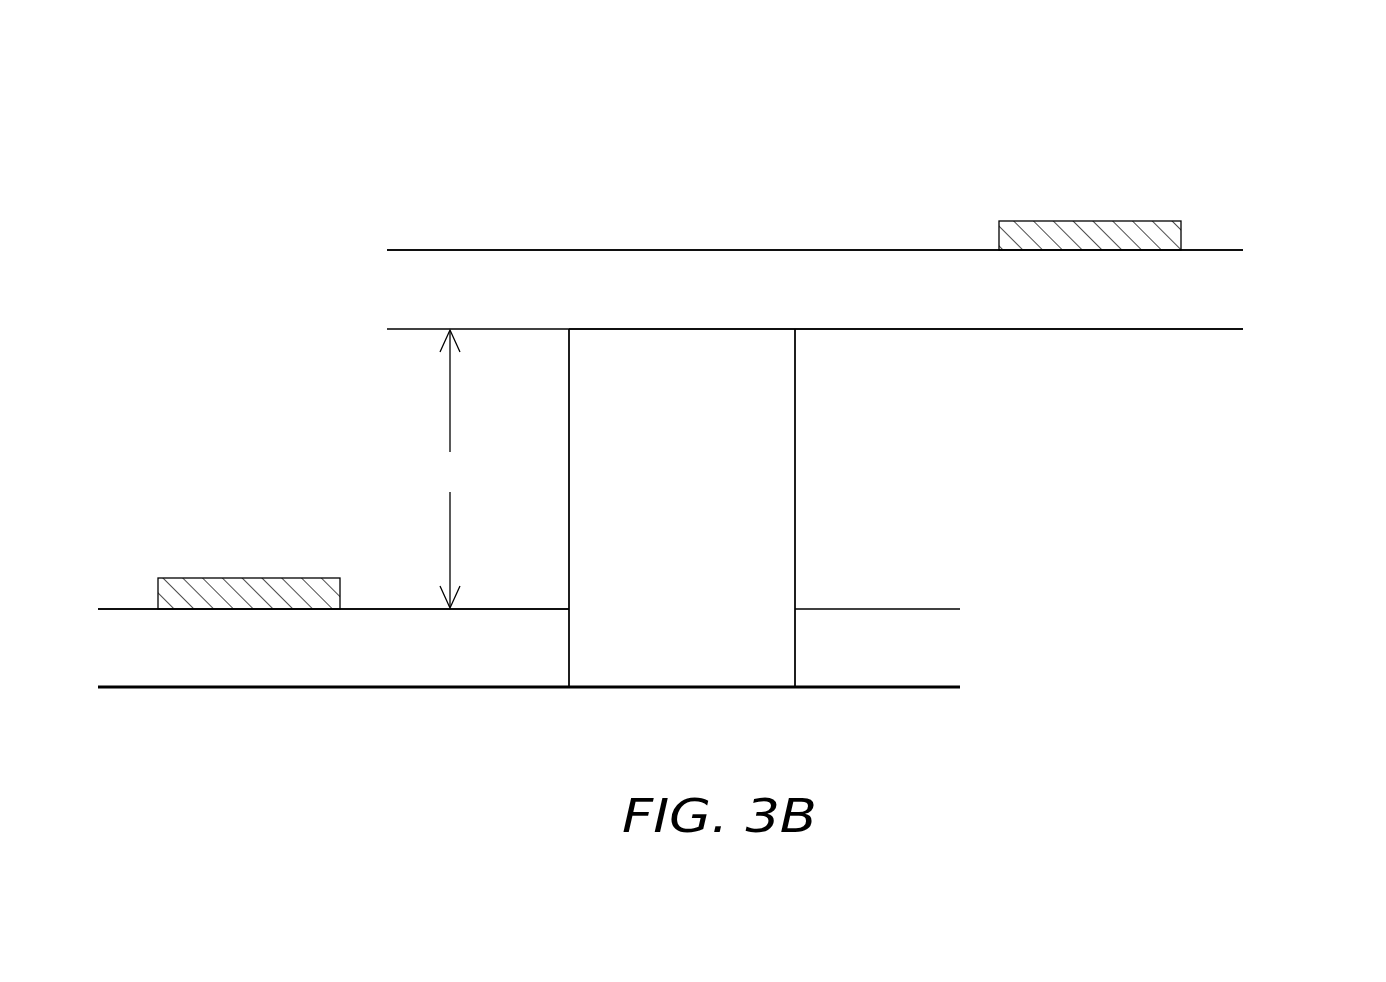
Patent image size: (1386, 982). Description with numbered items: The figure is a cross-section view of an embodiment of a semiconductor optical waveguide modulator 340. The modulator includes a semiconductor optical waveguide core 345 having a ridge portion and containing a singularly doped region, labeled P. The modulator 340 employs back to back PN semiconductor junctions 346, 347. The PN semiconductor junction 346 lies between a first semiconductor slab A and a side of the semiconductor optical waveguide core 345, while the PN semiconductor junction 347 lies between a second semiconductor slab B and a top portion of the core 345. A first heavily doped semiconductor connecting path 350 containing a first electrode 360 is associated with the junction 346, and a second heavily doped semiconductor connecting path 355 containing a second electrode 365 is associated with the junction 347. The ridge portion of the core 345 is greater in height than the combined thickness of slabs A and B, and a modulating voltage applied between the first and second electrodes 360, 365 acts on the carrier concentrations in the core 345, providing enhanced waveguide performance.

The semiconductor optical waveguide modulator 340 is at (1258, 155).
The semiconductor optical waveguide core 345 is at (797, 497).
The PN semiconductor junction 346 is at (569, 648).
The PN semiconductor junction 347 is at (755, 332).
The first heavily doped semiconductor connecting path 350 is at (390, 609).
The second heavily doped semiconductor connecting path 355 is at (730, 250).
The first electrode 360 is at (237, 578).
The second electrode 365 is at (1040, 221).